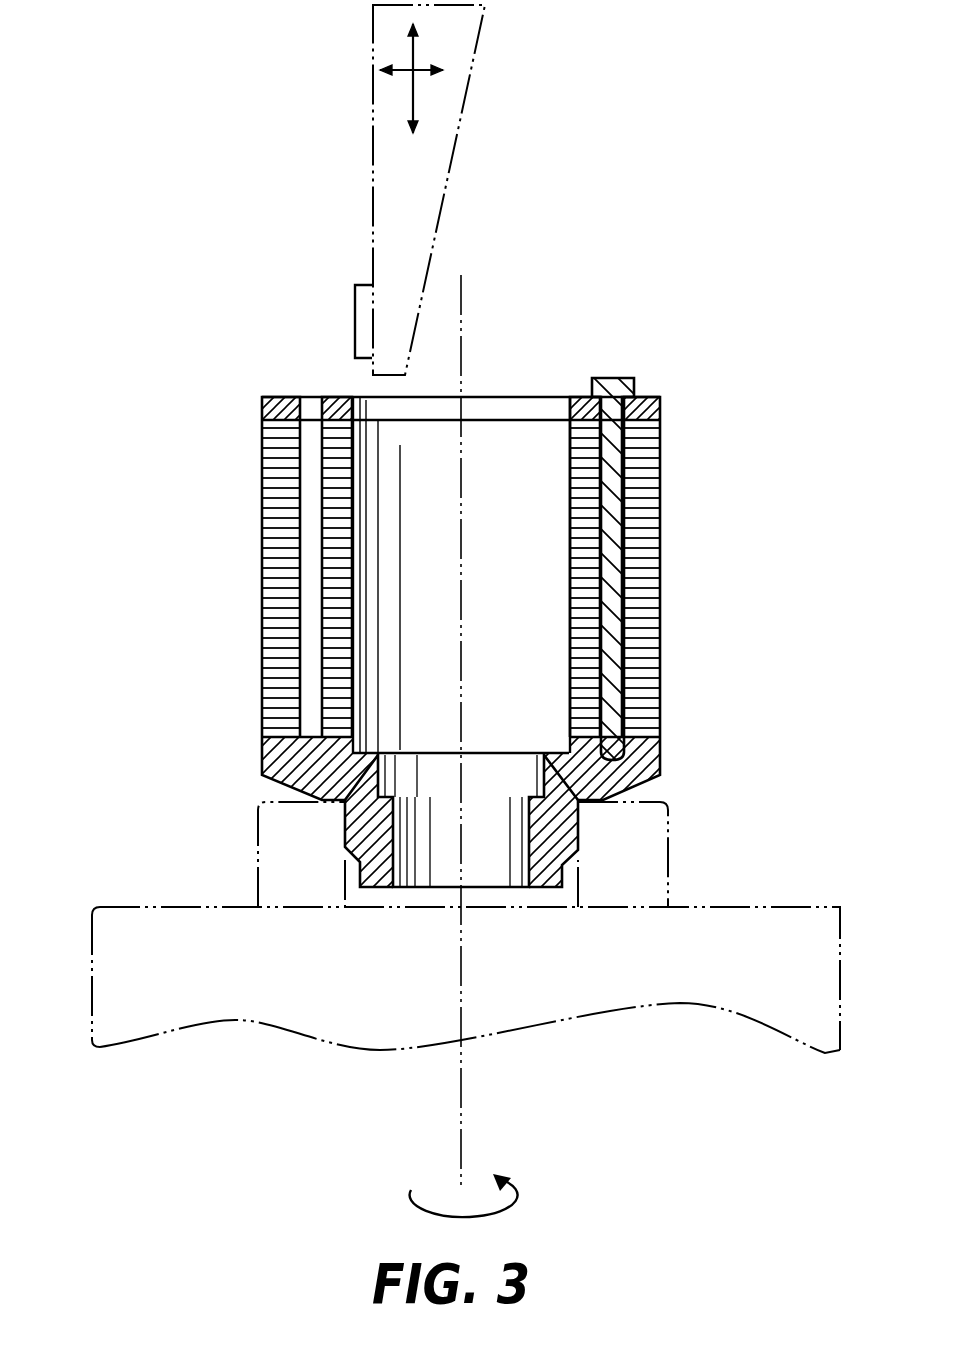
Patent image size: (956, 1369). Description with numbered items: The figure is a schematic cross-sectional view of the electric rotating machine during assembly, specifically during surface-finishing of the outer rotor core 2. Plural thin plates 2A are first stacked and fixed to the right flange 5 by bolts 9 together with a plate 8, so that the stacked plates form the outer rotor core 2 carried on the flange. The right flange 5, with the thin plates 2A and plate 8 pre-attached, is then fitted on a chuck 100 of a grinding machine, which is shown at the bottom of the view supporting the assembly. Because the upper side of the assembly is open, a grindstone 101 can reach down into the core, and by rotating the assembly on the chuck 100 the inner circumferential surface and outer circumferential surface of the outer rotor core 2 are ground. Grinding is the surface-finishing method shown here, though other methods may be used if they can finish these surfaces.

The outer rotor core 2 is at (570, 562).
The thin plates 2A is at (265, 467).
The right flange 5 is at (660, 776).
The plate 8 is at (652, 399).
The bolts 9 is at (612, 380).
The chuck 100 is at (655, 845).
The grindstone 101 is at (355, 310).